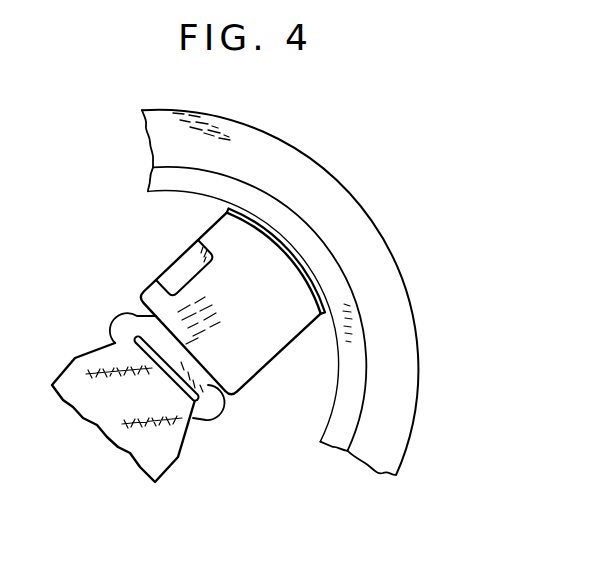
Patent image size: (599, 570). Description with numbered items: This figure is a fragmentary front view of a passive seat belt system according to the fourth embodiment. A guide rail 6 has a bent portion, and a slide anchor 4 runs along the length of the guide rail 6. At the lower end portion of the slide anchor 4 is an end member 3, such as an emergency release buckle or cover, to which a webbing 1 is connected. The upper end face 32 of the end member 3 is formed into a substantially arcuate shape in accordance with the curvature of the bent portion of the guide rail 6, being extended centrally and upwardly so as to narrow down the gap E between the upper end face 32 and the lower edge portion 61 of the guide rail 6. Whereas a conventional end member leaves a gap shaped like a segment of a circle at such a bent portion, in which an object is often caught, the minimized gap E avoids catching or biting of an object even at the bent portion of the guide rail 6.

The webbing 1 is at (168, 441).
The end member 3 is at (261, 382).
The upper end face 32 is at (300, 273).
The slide anchor 4 is at (317, 293).
The guide rail 6 is at (386, 301).
The lower edge portion 61 is at (338, 360).
The gap E is at (257, 277).